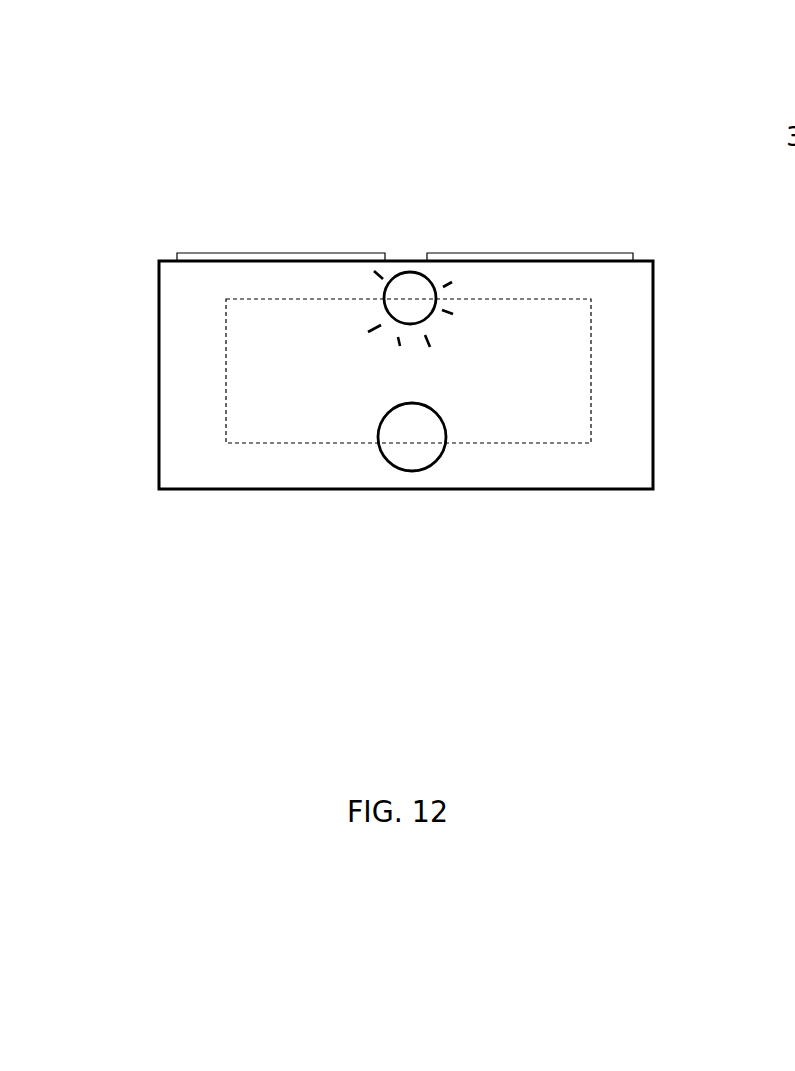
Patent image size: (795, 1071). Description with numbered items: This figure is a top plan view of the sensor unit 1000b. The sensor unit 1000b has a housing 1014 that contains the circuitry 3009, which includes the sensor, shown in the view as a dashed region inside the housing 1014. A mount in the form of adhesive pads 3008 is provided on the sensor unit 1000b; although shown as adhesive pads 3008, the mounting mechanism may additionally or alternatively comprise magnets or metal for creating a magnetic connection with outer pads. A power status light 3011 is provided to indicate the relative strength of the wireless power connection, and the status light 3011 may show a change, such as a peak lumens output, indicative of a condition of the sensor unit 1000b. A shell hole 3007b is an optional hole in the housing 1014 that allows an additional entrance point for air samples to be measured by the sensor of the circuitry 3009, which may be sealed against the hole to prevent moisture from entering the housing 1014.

The sensor unit 1000b is at (192, 514).
The housing 1014 is at (635, 446).
The adhesive pads 3008 is at (572, 257).
The circuitry 3009 is at (592, 357).
The power status light 3011 is at (410, 290).
The shell hole 3007b is at (410, 437).